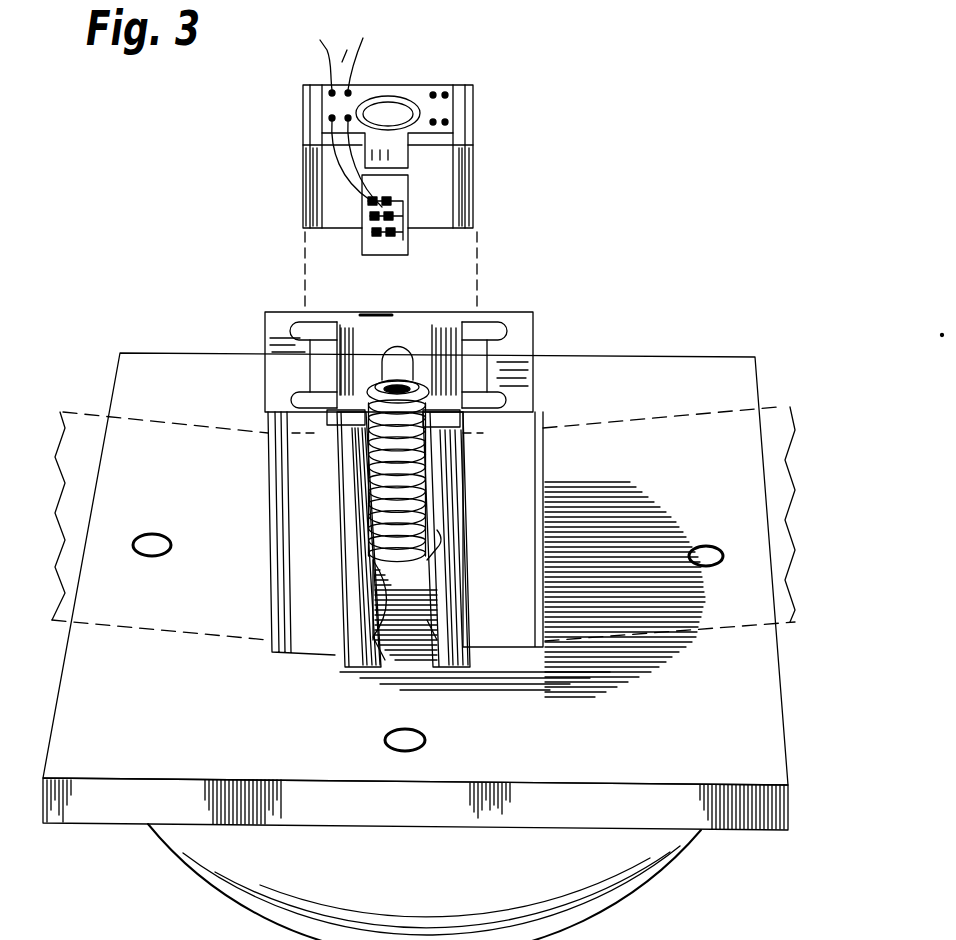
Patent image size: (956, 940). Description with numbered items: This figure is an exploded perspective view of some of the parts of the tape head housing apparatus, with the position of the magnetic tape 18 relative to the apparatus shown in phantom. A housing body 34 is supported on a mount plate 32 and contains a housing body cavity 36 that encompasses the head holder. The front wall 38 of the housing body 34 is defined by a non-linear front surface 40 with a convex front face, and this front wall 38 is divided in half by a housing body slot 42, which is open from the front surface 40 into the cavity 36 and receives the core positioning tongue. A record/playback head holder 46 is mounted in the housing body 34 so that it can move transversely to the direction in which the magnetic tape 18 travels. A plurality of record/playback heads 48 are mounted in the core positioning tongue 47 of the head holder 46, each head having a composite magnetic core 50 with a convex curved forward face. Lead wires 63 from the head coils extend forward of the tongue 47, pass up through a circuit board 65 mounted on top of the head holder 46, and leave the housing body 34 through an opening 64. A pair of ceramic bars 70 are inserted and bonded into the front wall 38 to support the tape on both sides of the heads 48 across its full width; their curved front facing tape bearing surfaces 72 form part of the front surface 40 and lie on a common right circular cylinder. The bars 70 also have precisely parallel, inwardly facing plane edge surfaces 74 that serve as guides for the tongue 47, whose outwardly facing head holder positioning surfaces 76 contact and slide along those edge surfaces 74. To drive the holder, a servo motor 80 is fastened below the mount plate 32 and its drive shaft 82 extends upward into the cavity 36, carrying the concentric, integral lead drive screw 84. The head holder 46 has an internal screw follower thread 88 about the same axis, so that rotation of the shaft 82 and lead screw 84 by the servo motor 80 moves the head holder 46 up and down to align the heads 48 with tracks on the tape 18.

The magnetic tape 18 is at (777, 407).
The mount plate 32 is at (770, 700).
The housing body 34 is at (280, 383).
The housing body cavity 36 is at (364, 333).
The front wall 38 is at (480, 432).
The front surface 40 is at (337, 566).
The housing body slot 42 is at (437, 565).
The record/playback head holder 46 is at (303, 97).
The core positioning tongue 47 is at (387, 187).
The record/playback heads 48 is at (360, 194).
The composite magnetic core 50 is at (400, 240).
The lead wires 63 is at (330, 58).
The opening 64 is at (400, 355).
The circuit board 65 is at (447, 107).
The ceramic bars 70 is at (338, 488).
The front facing magnetic tape bearing surfaces 72 is at (340, 526).
The plane edge surfaces 74 is at (427, 630).
The head holder positioning surfaces 76 is at (445, 183).
The servo motor 80 is at (687, 850).
The servo motor drive shaft 82 is at (413, 380).
The lead drive screw 84 is at (370, 460).
The internal screw follower thread 88 is at (390, 100).